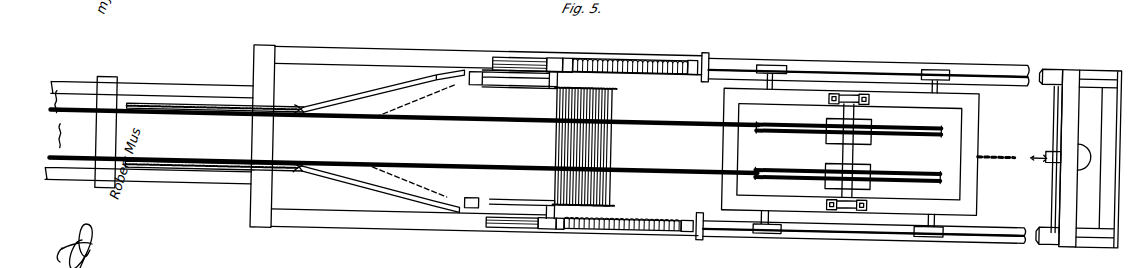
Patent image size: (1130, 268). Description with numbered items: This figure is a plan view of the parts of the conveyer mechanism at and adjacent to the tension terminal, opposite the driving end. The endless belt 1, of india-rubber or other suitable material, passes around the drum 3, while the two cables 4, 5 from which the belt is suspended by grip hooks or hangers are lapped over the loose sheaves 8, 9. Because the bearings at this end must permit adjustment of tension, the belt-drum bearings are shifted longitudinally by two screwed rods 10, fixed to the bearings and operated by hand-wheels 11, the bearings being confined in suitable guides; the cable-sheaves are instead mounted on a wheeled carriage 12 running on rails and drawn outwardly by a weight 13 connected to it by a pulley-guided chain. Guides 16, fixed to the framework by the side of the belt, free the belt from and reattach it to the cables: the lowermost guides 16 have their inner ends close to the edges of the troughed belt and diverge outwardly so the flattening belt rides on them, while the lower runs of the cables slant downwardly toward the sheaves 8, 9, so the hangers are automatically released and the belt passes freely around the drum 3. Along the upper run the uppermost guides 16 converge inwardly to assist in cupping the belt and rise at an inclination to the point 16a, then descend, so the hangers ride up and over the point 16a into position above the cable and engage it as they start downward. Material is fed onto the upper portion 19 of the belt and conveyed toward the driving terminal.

The endless belt 1 is at (70, 136).
The drum 3 is at (617, 86).
The cable 4 is at (645, 111).
The cable 5 is at (645, 158).
The loose sheave 8 is at (922, 116).
The loose sheave 9 is at (918, 160).
The screwed rod 10 is at (663, 54).
The hand-wheel 11 is at (712, 44).
The wheeled carriage 12 is at (975, 115).
The weight 13 is at (1075, 158).
The guide 16 is at (158, 107).
The point of guide 16a is at (299, 104).
The upper portion of belt 19 is at (149, 133).